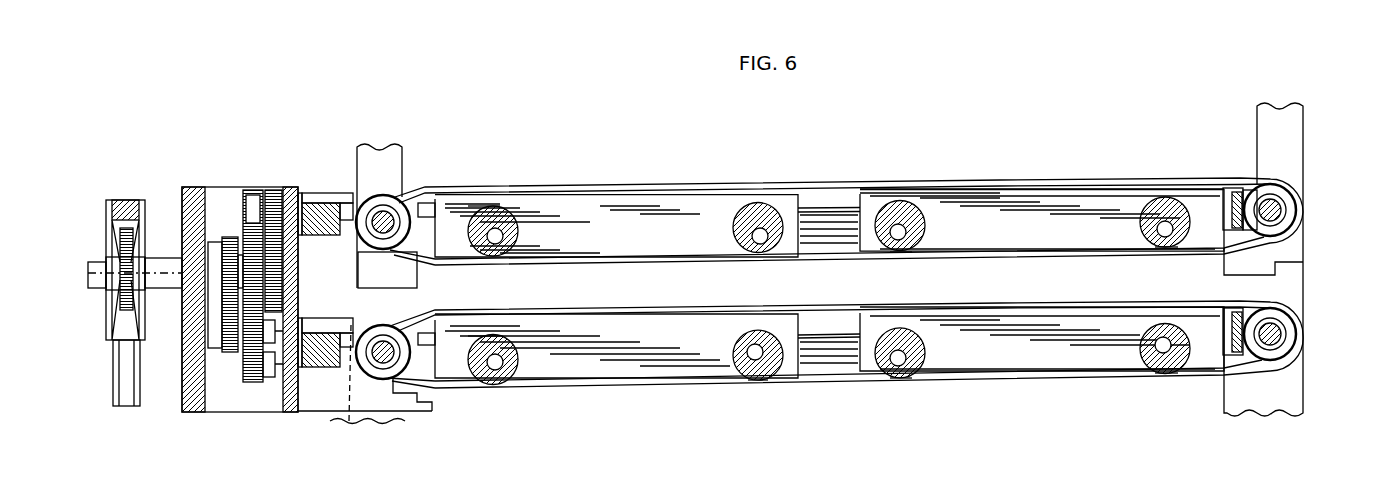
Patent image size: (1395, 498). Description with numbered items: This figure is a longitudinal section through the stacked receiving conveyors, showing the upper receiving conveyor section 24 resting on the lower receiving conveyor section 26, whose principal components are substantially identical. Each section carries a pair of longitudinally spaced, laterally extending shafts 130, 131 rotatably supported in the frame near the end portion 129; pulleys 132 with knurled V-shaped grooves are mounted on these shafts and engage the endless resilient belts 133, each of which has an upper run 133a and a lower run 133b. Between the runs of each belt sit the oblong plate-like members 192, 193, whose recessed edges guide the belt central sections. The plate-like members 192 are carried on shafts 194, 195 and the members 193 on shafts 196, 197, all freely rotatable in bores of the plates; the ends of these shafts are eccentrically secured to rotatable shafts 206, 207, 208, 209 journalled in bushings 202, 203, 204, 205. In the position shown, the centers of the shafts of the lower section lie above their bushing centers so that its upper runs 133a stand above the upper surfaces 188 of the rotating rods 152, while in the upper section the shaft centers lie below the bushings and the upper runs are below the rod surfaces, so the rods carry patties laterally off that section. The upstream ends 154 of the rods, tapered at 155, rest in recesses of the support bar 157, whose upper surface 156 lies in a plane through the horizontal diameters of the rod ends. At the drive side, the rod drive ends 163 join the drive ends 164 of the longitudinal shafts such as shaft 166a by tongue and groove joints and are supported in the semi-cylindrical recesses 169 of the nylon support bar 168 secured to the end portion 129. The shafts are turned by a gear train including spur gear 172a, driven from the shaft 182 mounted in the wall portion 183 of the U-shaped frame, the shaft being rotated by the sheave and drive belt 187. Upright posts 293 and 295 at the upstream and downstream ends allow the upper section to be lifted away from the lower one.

The upper receiving conveyor section 24 is at (540, 182).
The lower receiving conveyor section 26 is at (605, 308).
The end portion 129 is at (292, 400).
The shaft 130 is at (1295, 218).
The shaft 131 is at (383, 325).
The pulley 132 is at (400, 200).
The belt 133 is at (1098, 180).
The upper run 133a is at (822, 190).
The lower run 133b is at (832, 255).
The rod 152 is at (698, 181).
The upstream end 154 is at (1248, 310).
The tapered portion 155 is at (1224, 190).
The upper surface of support bar 156 is at (1244, 192).
The support bar 157 is at (1230, 215).
The drive end 163 is at (338, 193).
The drive end of shaft 164 is at (305, 196).
The shaft 166a is at (268, 190).
The support bar 168 is at (312, 240).
The semi-cylindrical recess 169 is at (326, 226).
The spur gear 172a is at (255, 192).
The shaft 182 is at (100, 262).
The wall portion 183 is at (197, 400).
The belt 187 is at (128, 395).
The upper surface of rod 188 is at (935, 182).
The plate-like member 192 is at (1020, 226).
The plate-like member 193 is at (630, 343).
The shaft 194 is at (1165, 255).
The shaft 195 is at (905, 255).
The shaft 196 is at (736, 338).
The shaft 197 is at (493, 257).
The bushing 202 is at (1140, 220).
The bushing 203 is at (925, 232).
The bushing 204 is at (733, 218).
The bushing 205 is at (518, 238).
The rotatable shaft 206 is at (1138, 236).
The rotatable shaft 207 is at (918, 214).
The rotatable shaft 208 is at (735, 236).
The rotatable shaft 209 is at (520, 224).
The upright post 293 is at (1257, 112).
The upright post 295 is at (383, 150).